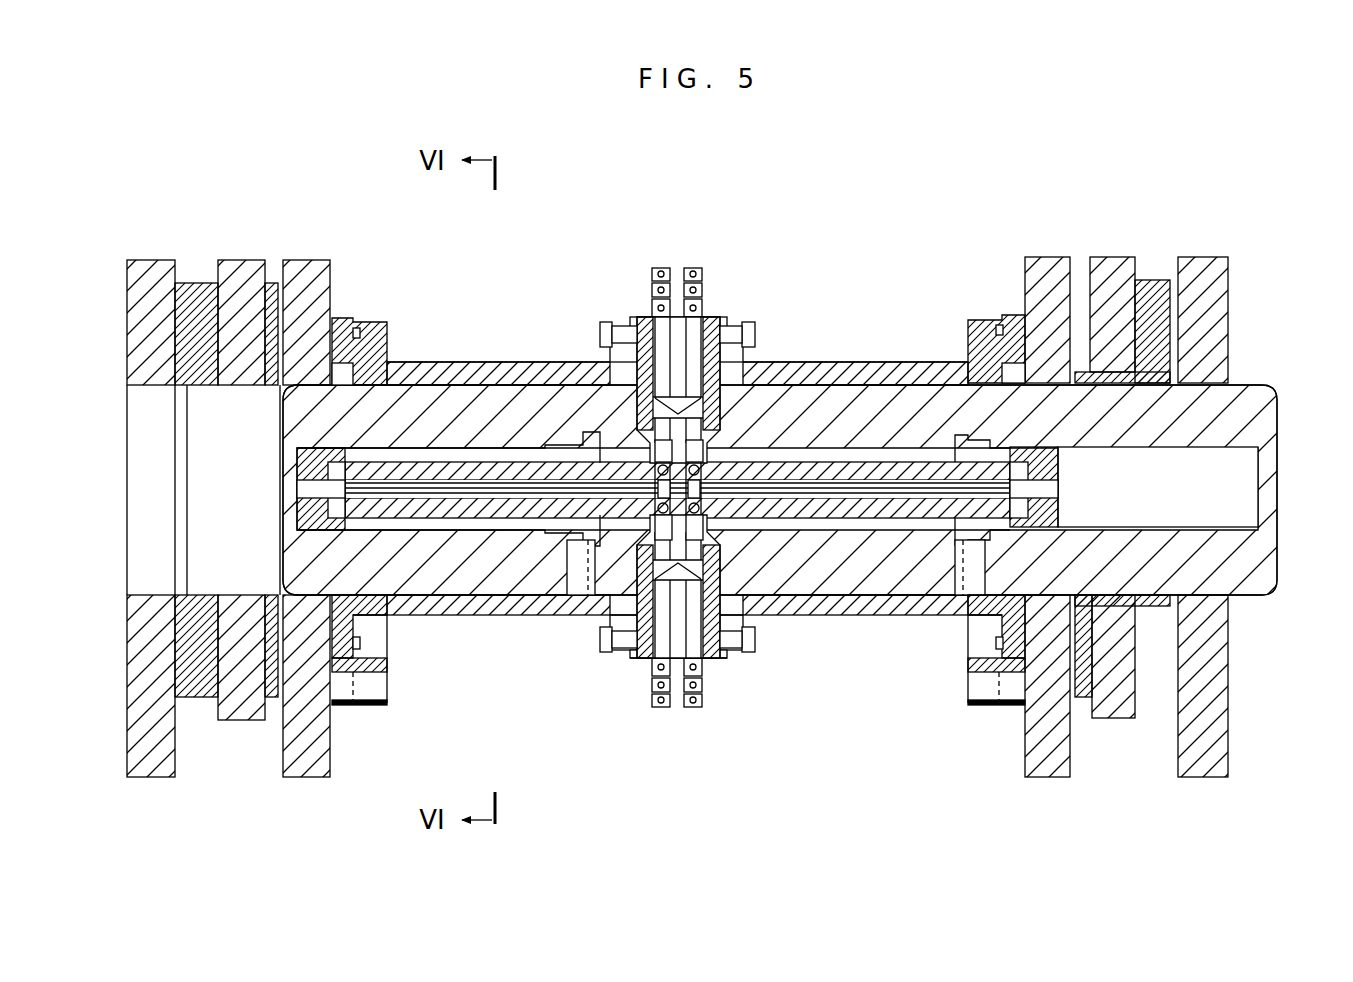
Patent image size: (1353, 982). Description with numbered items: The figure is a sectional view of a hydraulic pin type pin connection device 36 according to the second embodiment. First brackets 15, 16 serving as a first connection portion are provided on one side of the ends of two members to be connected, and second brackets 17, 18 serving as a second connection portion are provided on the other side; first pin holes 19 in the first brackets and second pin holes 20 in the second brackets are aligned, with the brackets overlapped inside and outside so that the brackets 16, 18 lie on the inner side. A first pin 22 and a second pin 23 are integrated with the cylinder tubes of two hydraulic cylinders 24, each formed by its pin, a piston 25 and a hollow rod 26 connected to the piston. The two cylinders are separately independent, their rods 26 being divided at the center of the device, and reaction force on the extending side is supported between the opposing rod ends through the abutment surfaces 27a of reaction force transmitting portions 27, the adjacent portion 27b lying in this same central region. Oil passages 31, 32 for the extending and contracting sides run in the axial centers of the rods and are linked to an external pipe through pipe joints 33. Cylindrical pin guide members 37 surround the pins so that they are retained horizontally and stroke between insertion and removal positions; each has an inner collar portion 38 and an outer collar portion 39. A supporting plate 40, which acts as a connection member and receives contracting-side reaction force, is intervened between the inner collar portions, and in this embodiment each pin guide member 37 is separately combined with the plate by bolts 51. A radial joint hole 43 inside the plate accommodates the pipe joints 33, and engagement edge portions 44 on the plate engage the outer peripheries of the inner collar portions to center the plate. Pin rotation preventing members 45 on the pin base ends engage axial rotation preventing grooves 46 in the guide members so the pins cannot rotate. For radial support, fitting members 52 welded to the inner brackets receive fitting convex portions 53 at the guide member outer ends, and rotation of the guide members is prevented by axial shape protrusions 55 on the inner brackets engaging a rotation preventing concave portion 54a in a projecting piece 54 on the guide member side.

The first bracket 15 is at (243, 260).
The first bracket 16 is at (305, 260).
The second bracket 17 is at (1105, 257).
The second bracket 18 is at (1043, 257).
The first pin hole 19 is at (235, 390).
The second pin hole 20 is at (1120, 386).
The first pin 22 is at (497, 375).
The second pin 23 is at (1240, 562).
The hydraulic cylinder 24 is at (440, 380).
The piston 25 is at (300, 520).
The hollow rod 26 is at (500, 518).
The reaction force transmitting portion 27 is at (640, 442).
The abutment surface 27a is at (710, 505).
The second seal portion 27b is at (715, 545).
The oil passage 31 is at (418, 497).
The oil passage 32 is at (477, 462).
The pipe joint 33 is at (690, 268).
The pin connection device 36 is at (845, 284).
The pin guide member 37 is at (455, 617).
The inner collar portion 38 is at (625, 318).
The outer collar portion 39 is at (365, 320).
The supporting plate 40 is at (630, 382).
The joint hole 43 is at (700, 660).
The engagement edge portion 44 is at (627, 658).
The pin rotation preventing member 45 is at (580, 600).
The rotation preventing groove 46 is at (420, 617).
The bolt 51 is at (605, 330).
The fitting member 52 is at (350, 330).
The fitting convex portion 53 is at (320, 392).
The projecting piece 54 is at (355, 683).
The rotation preventing concave portion 54a is at (375, 705).
The axial shape protrusion 55 is at (365, 705).